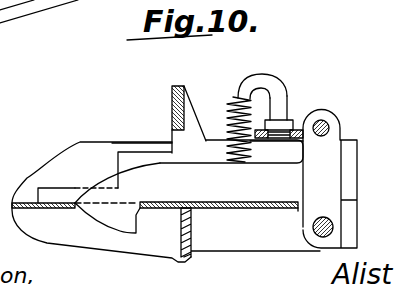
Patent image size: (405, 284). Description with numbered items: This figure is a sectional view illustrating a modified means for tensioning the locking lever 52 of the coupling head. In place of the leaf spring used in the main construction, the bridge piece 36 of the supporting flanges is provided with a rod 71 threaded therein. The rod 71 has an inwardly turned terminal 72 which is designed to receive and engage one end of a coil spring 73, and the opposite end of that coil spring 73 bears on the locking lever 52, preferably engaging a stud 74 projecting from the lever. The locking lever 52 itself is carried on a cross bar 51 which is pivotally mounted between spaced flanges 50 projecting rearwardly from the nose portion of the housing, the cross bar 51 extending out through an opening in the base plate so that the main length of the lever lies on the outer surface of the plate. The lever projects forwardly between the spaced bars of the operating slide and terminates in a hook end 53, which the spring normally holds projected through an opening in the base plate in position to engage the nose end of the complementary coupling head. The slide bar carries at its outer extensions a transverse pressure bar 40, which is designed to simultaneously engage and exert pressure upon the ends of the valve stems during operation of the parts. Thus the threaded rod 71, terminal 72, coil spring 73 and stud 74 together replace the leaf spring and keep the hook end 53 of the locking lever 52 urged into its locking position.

The bridge piece 36 is at (299, 132).
The pressure bar 40 is at (172, 101).
The spaced flanges 50 is at (155, 209).
The cross bar 51 is at (324, 170).
The locking lever 52 is at (243, 187).
The hook end 53 is at (125, 223).
The rod 71 is at (277, 103).
The inwardly turned terminal 72 is at (237, 94).
The coil spring 73 is at (232, 124).
The stud 74 is at (234, 162).